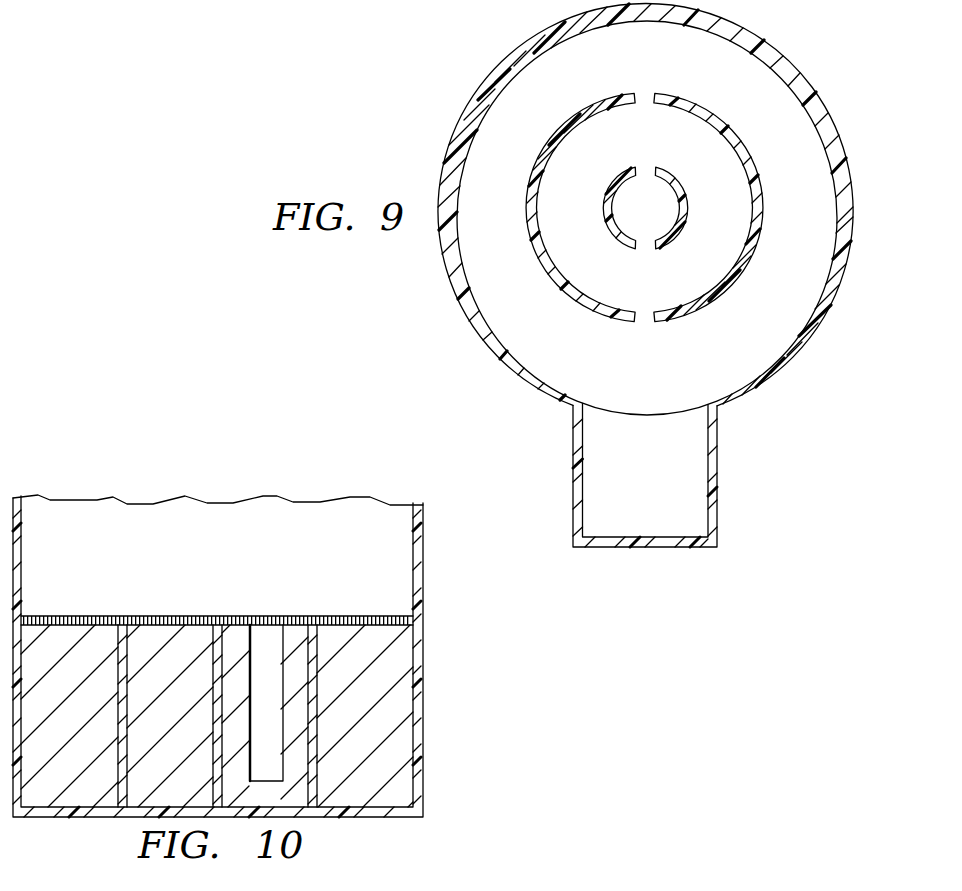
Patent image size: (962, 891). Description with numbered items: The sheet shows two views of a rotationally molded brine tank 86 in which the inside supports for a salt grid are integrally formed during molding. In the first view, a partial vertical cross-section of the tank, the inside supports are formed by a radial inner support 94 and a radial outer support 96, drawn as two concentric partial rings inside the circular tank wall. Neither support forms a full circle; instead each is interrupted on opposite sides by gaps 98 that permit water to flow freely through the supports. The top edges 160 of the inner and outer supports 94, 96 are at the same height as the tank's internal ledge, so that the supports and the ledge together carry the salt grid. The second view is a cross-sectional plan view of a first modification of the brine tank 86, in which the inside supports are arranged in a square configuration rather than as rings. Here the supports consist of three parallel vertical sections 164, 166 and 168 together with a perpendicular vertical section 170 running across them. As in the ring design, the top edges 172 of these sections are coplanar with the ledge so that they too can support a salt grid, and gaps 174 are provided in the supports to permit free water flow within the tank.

In FIG. 9, the brine tank 86 is at (812, 51).
In FIG. 9, the radial inner support 94 is at (675, 241).
In FIG. 9, the radial outer support 96 is at (537, 157).
In FIG. 9, the gaps 98 is at (643, 93).
In FIG. 9, the top edges 160 is at (592, 108).
In FIG. 10, the parallel vertical section 164 is at (118, 673).
In FIG. 10, the parallel vertical section 166 is at (213, 673).
In FIG. 10, the parallel vertical section 168 is at (317, 676).
In FIG. 10, the perpendicular vertical section 170 is at (381, 759).
In FIG. 10, the top edges 172 is at (378, 622).
In FIG. 10, the gaps 174 is at (263, 638).